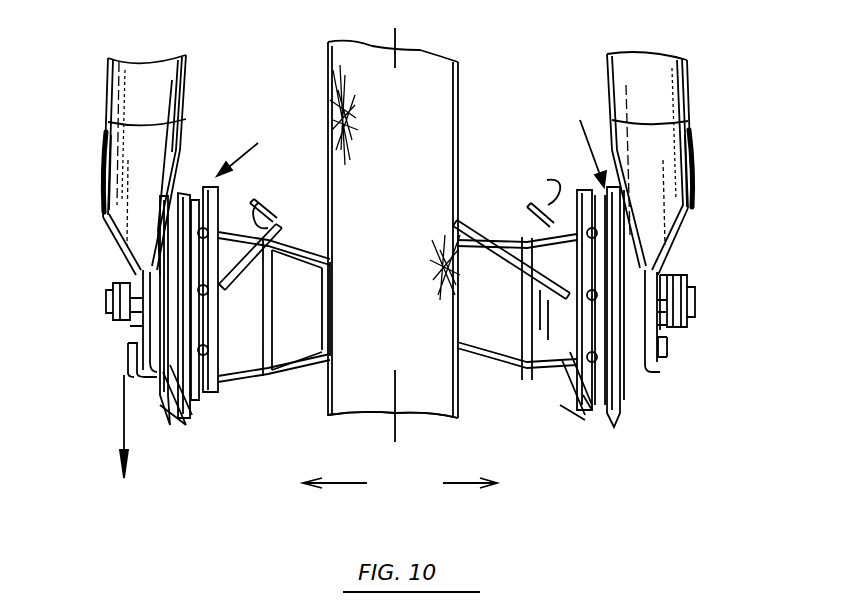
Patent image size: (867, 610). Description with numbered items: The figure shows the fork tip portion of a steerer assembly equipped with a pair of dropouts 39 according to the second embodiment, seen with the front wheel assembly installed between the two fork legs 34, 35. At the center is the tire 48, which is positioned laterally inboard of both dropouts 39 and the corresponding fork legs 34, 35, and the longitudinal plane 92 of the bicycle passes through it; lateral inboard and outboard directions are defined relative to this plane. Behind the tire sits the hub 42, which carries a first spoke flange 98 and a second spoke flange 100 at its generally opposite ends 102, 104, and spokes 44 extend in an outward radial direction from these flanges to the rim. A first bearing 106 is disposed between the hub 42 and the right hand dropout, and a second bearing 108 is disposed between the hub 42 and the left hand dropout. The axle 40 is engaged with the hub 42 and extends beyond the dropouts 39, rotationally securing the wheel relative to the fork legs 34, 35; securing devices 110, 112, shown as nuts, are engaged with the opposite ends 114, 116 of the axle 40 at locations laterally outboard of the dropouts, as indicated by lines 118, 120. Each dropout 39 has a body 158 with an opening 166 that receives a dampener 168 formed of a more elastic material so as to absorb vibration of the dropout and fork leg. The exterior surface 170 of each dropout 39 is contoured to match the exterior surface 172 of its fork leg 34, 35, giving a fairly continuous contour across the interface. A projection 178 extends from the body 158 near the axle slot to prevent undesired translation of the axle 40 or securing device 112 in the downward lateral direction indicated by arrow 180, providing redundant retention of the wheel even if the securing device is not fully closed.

The fork leg 34 is at (684, 83).
The fork leg 35 is at (107, 73).
The dropout 39 is at (125, 177).
The axle 40 is at (700, 303).
The hub 42 is at (316, 322).
The spokes 44 is at (230, 200).
The tire 48 is at (406, 200).
The longitudinal plane 92 is at (395, 437).
The first spoke flange 98 is at (583, 424).
The second spoke flange 100 is at (207, 417).
The end of hub 102 is at (253, 149).
The end of hub 104 is at (579, 142).
The first bearing 106 is at (630, 368).
The second bearing 108 is at (163, 385).
The securing device 110 is at (688, 279).
The securing device 112 is at (115, 322).
The end of axle 114 is at (667, 323).
The end of axle 116 is at (108, 302).
The line 118 is at (458, 484).
The line 120 is at (343, 487).
The body 158 is at (128, 215).
The opening 166 is at (104, 141).
The dampener 168 is at (110, 165).
The exterior surface of dropout 170 is at (182, 130).
The exterior surface of fork leg 172 is at (117, 94).
The projection 178 is at (126, 352).
The arrow 180 is at (124, 428).